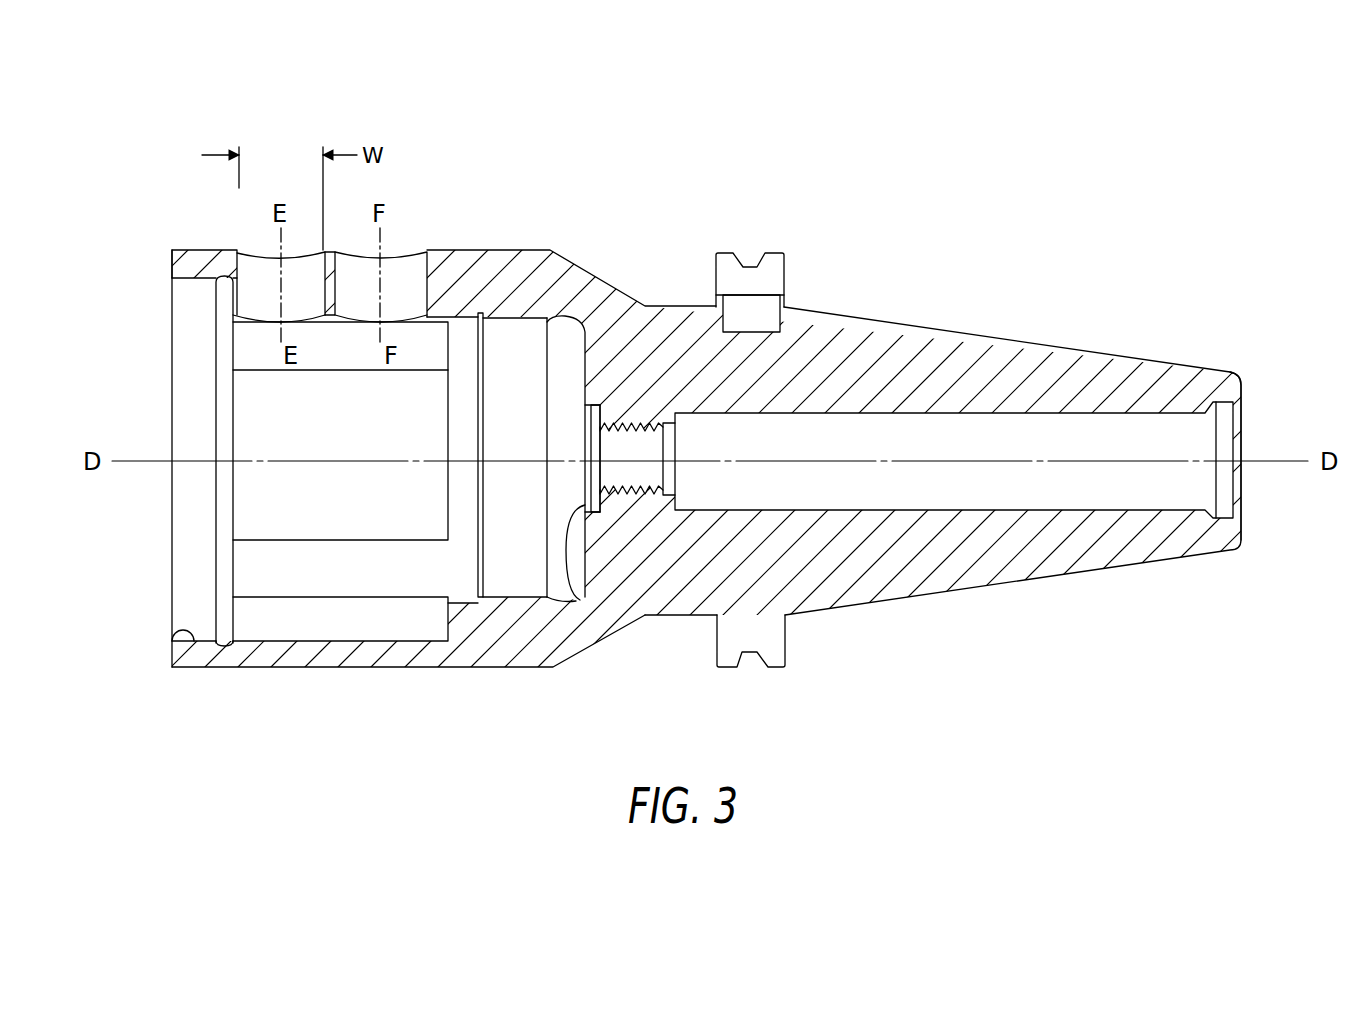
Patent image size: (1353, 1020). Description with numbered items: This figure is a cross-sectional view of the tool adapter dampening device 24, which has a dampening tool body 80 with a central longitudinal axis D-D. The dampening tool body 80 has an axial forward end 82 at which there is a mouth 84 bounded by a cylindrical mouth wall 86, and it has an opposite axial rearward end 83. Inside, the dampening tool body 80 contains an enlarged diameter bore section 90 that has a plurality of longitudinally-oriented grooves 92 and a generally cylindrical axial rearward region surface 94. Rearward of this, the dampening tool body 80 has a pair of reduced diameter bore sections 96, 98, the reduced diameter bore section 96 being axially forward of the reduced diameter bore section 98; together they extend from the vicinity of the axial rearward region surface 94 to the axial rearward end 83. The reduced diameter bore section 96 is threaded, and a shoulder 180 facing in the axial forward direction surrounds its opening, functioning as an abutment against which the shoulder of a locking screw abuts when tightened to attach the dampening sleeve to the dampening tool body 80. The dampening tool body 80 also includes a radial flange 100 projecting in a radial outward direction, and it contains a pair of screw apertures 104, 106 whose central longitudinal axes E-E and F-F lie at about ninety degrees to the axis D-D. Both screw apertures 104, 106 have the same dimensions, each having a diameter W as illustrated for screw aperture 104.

The tool adapter dampening device 24 is at (900, 281).
The dampening tool body 80 is at (527, 250).
The axial forward end 82 is at (175, 265).
The axial rearward end 83 is at (1243, 382).
The mouth 84 is at (182, 373).
The cylindrical mouth wall 86 is at (172, 636).
The enlarged diameter bore section 90 is at (273, 478).
The longitudinally-oriented grooves 92 is at (263, 615).
The axial rearward region surface 94 is at (498, 600).
The reduced diameter bore section 96 is at (640, 445).
The reduced diameter bore section 98 is at (972, 440).
The radial flange 100 is at (770, 272).
The screw aperture 104 is at (252, 272).
The screw aperture 106 is at (398, 277).
The shoulder 180 is at (577, 600).